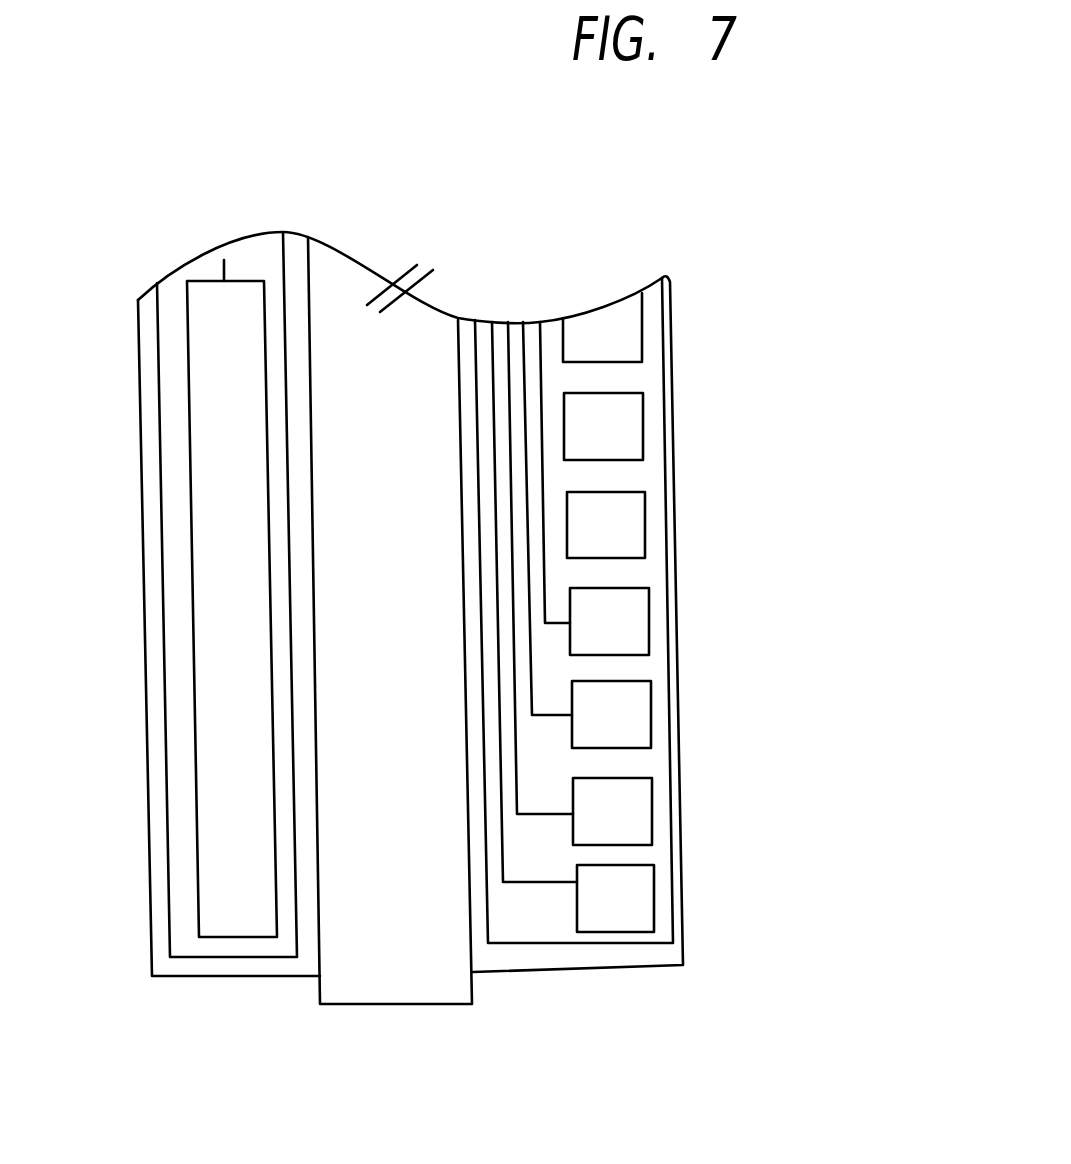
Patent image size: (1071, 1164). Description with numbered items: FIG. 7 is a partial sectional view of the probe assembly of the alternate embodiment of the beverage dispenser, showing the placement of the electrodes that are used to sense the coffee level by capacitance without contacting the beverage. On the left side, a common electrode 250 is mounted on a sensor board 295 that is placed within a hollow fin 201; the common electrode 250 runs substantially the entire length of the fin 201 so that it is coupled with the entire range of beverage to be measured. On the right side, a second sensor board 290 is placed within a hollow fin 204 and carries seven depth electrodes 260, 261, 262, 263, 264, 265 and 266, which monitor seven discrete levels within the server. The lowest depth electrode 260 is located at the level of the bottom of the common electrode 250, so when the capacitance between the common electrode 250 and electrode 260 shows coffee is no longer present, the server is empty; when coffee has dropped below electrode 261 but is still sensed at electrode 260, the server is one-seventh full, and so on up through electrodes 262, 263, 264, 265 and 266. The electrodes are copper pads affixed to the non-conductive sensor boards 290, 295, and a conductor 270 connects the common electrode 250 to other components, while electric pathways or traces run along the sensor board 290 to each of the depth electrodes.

The fin 201 is at (151, 923).
The fin 204 is at (683, 950).
The common electrode 250 is at (208, 452).
The depth electrode 260 is at (640, 903).
The depth electrode 261 is at (637, 814).
The depth electrode 262 is at (637, 719).
The depth electrode 263 is at (633, 623).
The depth electrode 264 is at (632, 528).
The depth electrode 265 is at (628, 432).
The depth electrode 266 is at (627, 337).
The conductive trace 270 is at (224, 260).
The sensor board 290 is at (185, 942).
The sensor board 295 is at (520, 928).